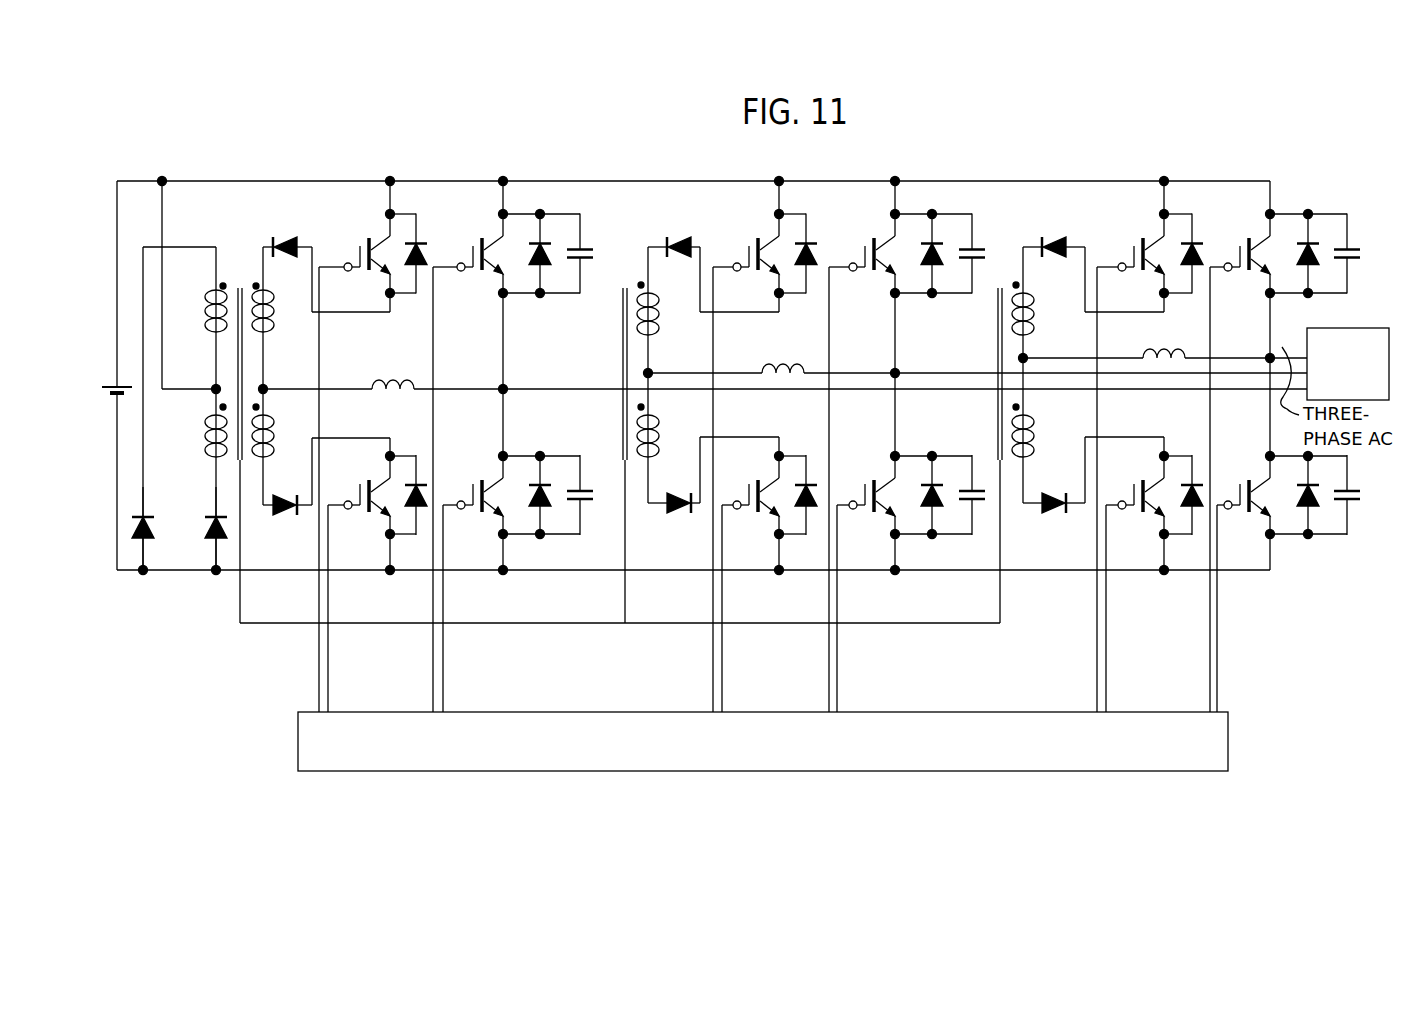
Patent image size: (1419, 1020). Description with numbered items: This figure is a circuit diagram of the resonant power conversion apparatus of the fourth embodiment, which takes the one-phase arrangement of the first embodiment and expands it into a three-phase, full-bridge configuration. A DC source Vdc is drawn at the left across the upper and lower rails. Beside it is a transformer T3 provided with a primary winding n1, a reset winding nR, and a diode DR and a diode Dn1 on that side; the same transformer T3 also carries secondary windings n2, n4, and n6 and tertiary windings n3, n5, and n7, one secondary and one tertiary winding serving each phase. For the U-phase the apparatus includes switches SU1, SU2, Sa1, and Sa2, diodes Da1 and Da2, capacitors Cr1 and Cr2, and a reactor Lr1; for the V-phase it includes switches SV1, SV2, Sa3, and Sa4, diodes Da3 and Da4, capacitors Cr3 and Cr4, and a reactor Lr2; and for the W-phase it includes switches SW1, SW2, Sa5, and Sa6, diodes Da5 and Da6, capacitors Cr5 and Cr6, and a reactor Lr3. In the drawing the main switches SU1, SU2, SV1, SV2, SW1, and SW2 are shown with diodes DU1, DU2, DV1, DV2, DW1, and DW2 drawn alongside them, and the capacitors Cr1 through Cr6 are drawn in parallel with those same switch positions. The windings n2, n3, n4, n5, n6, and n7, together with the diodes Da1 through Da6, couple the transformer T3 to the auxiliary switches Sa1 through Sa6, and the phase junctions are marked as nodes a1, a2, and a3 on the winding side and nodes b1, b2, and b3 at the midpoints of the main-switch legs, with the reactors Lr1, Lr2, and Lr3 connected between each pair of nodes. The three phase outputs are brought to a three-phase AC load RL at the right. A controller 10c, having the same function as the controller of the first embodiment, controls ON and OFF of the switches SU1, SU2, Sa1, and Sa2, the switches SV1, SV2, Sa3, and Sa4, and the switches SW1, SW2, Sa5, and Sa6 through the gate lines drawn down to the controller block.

The DC power supply Vdc is at (104, 372).
The transformer T3 is at (615, 429).
The reset winding nR is at (198, 318).
The primary winding n1 is at (201, 453).
The secondary winding n2 is at (279, 318).
The tertiary winding n3 is at (279, 447).
The secondary winding n4 is at (662, 310).
The tertiary winding n5 is at (662, 438).
The secondary winding n6 is at (1037, 302).
The tertiary winding n7 is at (1040, 430).
The diode Dn1 is at (197, 524).
The diode DR is at (154, 408).
The diode Da1 is at (326, 257).
The diode Da2 is at (326, 497).
The diode Da3 is at (713, 257).
The diode Da4 is at (713, 494).
The diode Da5 is at (1093, 257).
The diode Da6 is at (1093, 493).
The switch Sa1 is at (373, 446).
The switch Sa2 is at (377, 575).
The switch Sa3 is at (765, 446).
The switch Sa4 is at (769, 574).
The switch Sa5 is at (1150, 446).
The switch Sa6 is at (1154, 574).
The switch SU1 is at (470, 446).
The switch SU2 is at (475, 550).
The switch SV1 is at (864, 446).
The switch SV2 is at (868, 542).
The switch SW1 is at (1242, 446).
The switch SW2 is at (1246, 535).
The freewheeling diode DU1 is at (541, 272).
The freewheeling diode DU2 is at (541, 480).
The freewheeling diode DV1 is at (933, 272).
The freewheeling diode DV2 is at (933, 483).
The freewheeling diode DW1 is at (1308, 237).
The freewheeling diode DW2 is at (1308, 514).
The capacitor Cr1 is at (592, 254).
The capacitor Cr2 is at (591, 497).
The capacitor Cr3 is at (984, 254).
The capacitor Cr4 is at (961, 504).
The capacitor Cr5 is at (1362, 254).
The capacitor Cr6 is at (1366, 499).
The reactor Lr1 is at (785, 366).
The reactor Lr2 is at (977, 351).
The reactor Lr3 is at (1165, 338).
The node a1 is at (267, 389).
The node a2 is at (656, 375).
The node a3 is at (1031, 356).
The node b1 is at (507, 388).
The node b2 is at (898, 372).
The node b3 is at (1273, 357).
The load RL is at (1345, 324).
The controller 10c is at (1228, 738).